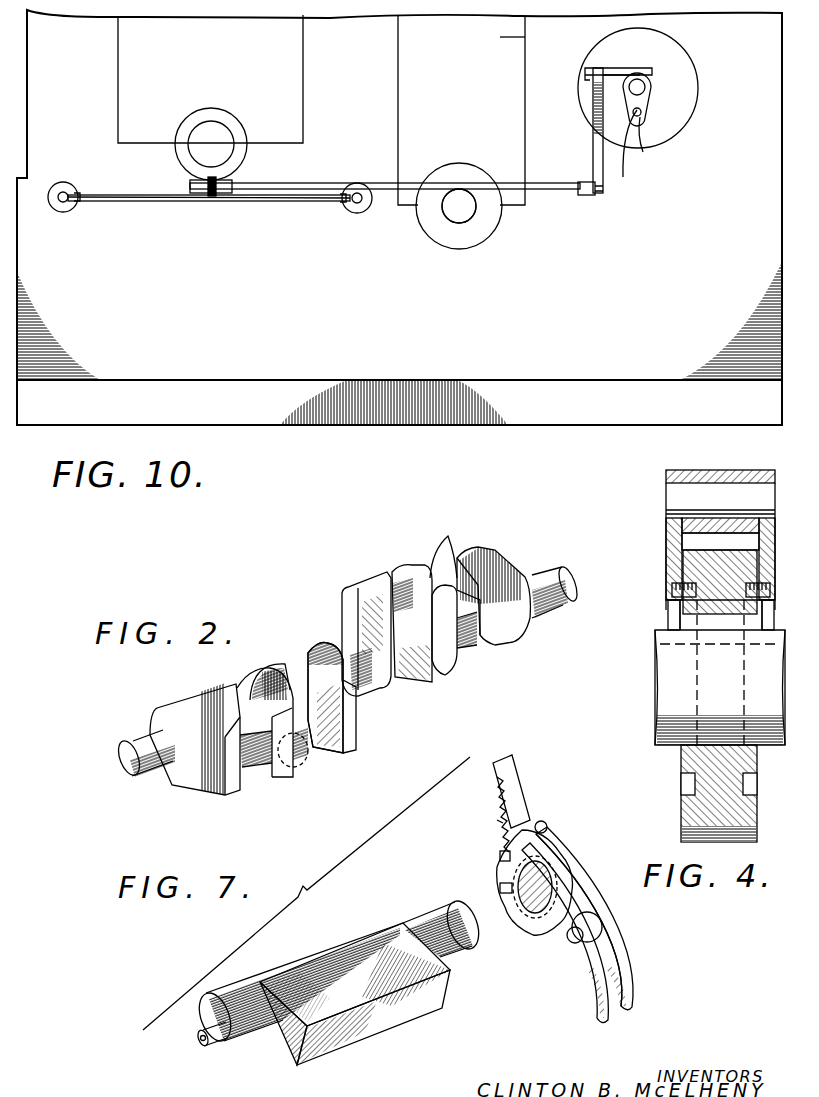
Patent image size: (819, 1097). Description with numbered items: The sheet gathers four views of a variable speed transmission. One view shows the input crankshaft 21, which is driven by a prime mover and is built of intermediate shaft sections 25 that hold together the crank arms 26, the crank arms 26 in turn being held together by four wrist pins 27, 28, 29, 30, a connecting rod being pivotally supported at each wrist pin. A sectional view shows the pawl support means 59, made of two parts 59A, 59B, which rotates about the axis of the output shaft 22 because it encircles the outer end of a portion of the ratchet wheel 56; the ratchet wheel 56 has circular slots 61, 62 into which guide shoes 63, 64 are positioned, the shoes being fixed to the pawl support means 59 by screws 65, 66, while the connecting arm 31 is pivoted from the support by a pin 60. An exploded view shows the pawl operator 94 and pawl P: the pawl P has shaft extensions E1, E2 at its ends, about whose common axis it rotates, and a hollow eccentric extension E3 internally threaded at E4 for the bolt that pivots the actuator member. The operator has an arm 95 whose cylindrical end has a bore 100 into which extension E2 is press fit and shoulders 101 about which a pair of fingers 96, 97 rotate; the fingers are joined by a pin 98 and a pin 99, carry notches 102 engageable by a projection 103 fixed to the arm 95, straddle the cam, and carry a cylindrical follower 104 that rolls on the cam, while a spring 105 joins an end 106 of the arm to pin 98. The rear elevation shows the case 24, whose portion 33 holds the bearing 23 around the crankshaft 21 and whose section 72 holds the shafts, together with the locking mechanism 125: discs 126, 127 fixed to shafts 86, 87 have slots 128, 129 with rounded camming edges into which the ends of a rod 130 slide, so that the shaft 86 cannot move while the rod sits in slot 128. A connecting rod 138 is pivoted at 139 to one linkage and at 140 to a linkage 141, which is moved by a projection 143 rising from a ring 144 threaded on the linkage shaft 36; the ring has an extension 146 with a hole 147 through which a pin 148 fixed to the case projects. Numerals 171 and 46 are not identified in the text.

In FIG. 10, the section of case 72 is at (118, 64).
In FIG. 10, the portion of case 33 is at (461, 110).
In FIG. 10, the partition wall 171 is at (525, 37).
In FIG. 10, the fixed support means 24 is at (358, 319).
In FIG. 10, the output shaft 22 is at (227, 155).
In FIG. 4, the output shaft 22 is at (665, 682).
In FIG. 10, the bearing 23 is at (483, 230).
In FIG. 10, the crankshaft 21 is at (460, 213).
In FIG. 2, the crankshaft 21 is at (147, 807).
In FIG. 10, the rod 130 is at (120, 193).
In FIG. 10, the connecting rod 138 is at (407, 183).
In FIG. 10, the pivot 139 is at (212, 178).
In FIG. 10, the shaft 87 is at (63, 205).
In FIG. 10, the disc 127 is at (70, 203).
In FIG. 10, the slot 129 is at (78, 193).
In FIG. 10, the shaft 86 is at (355, 213).
In FIG. 10, the slot 128 is at (343, 202).
In FIG. 10, the disc 126 is at (363, 210).
In FIG. 10, the locking mechanism 125 is at (230, 233).
In FIG. 10, the gear 46 is at (670, 63).
In FIG. 10, the linkage 141 is at (585, 68).
In FIG. 10, the projection 143 is at (640, 70).
In FIG. 10, the ring 144 is at (652, 97).
In FIG. 10, the linkage shaft 36 is at (647, 88).
In FIG. 10, the pin 148 is at (641, 114).
In FIG. 10, the extension 146 is at (658, 148).
In FIG. 10, the hole 147 is at (632, 157).
In FIG. 10, the pivot 140 is at (597, 197).
In FIG. 2, the intermediate shaft sections 25 is at (117, 747).
In FIG. 2, the crank arms 26 is at (215, 690).
In FIG. 2, the wrist pin 27 is at (263, 770).
In FIG. 2, the wrist pin 28 is at (352, 730).
In FIG. 2, the wrist pin 29 is at (442, 667).
In FIG. 2, the wrist pin 30 is at (470, 575).
In FIG. 7, the pawl P is at (363, 913).
In FIG. 7, the shaft extension E1 is at (242, 990).
In FIG. 7, the shaft extension E2 is at (440, 910).
In FIG. 7, the eccentric extension E3 is at (218, 1046).
In FIG. 7, the internal thread E4 is at (198, 1038).
In FIG. 7, the pawl operator 94 is at (550, 889).
In FIG. 7, the arm 95 is at (512, 777).
In FIG. 7, the end of arm 106 is at (495, 765).
In FIG. 7, the spring 105 is at (500, 822).
In FIG. 7, the notches 102 is at (500, 853).
In FIG. 7, the pin 98 is at (503, 893).
In FIG. 7, the bore 100 is at (543, 902).
In FIG. 7, the projection 103 is at (520, 822).
In FIG. 7, the shoulders 101 is at (547, 870).
In FIG. 7, the finger 97 is at (613, 965).
In FIG. 7, the finger 96 is at (602, 995).
In FIG. 7, the cylindrical follower 104 is at (597, 927).
In FIG. 7, the pin 99 is at (575, 943).
In FIG. 4, the connecting arm 31 is at (708, 470).
In FIG. 4, the pawl support means 59 is at (665, 500).
In FIG. 4, the pawl support part 59A is at (668, 548).
In FIG. 4, the pawl support part 59B is at (770, 523).
In FIG. 4, the pin 60 is at (727, 493).
In FIG. 4, the guide shoe 64 is at (753, 580).
In FIG. 4, the guide shoe 63 is at (690, 580).
In FIG. 4, the screw 65 is at (667, 595).
In FIG. 4, the circular slot 61 is at (687, 600).
In FIG. 4, the circular slot 62 is at (740, 598).
In FIG. 4, the screw 66 is at (780, 598).
In FIG. 4, the ratchet wheel 56 is at (680, 768).